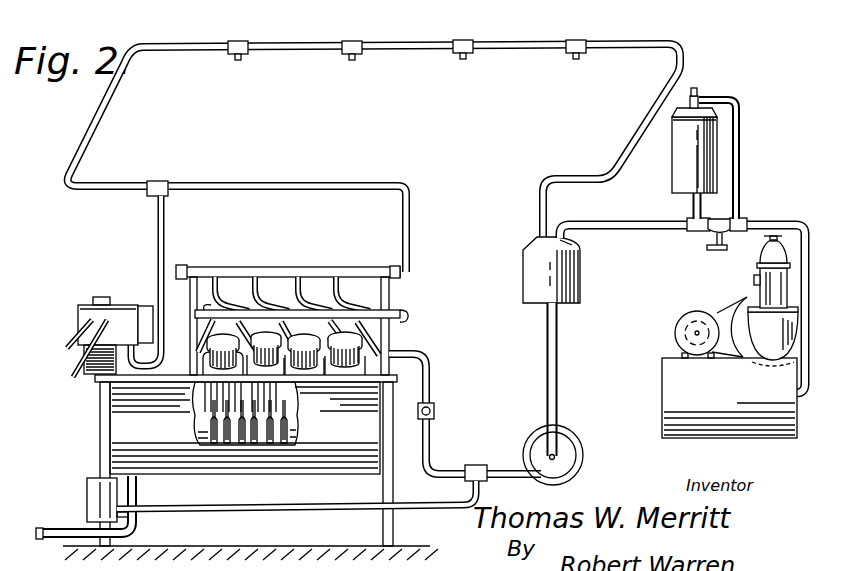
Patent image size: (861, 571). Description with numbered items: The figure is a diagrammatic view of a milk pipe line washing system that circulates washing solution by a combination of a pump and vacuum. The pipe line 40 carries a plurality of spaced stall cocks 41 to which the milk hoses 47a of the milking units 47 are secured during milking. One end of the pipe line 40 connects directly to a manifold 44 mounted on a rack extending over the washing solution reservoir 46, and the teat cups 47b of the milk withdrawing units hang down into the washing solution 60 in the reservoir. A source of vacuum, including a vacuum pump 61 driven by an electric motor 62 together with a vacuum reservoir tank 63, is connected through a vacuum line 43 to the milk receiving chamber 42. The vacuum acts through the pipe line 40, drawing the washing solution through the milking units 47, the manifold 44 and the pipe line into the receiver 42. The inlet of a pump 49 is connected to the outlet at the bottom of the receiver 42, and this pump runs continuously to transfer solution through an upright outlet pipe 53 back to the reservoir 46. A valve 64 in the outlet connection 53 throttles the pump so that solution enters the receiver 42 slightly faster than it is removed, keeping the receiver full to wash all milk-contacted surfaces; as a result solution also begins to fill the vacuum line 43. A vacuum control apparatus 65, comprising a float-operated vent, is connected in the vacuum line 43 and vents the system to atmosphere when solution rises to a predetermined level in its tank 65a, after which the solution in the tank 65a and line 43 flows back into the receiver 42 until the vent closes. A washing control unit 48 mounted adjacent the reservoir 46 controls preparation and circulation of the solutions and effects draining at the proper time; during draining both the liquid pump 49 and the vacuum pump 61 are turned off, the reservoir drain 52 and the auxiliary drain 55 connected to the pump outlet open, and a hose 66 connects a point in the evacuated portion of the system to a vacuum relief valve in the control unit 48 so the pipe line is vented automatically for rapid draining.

The pipe line 40 is at (88, 135).
The stall cocks 41 is at (243, 41).
The milk receiving chamber 42 is at (580, 277).
The vacuum line 43 is at (630, 229).
The manifold 44 is at (279, 267).
The washing solution reservoir 46 is at (125, 424).
The milking units 47 is at (365, 347).
The milk hoses 47a is at (400, 304).
The teat cups 47b is at (230, 450).
The washing control unit 48 is at (83, 300).
The pump 49 is at (575, 446).
The reservoir drain 52 is at (51, 528).
The upright outlet pipe 53 is at (408, 352).
The auxiliary drain 55 is at (90, 478).
The washing solution 60 is at (205, 440).
The vacuum pump 61 is at (775, 347).
The electric motor 62 is at (682, 326).
The vacuum reservoir tank 63 is at (662, 438).
The valve 64 is at (433, 408).
The vacuum control apparatus 65 is at (723, 130).
The tank 65a is at (713, 160).
The hose 66 is at (166, 246).